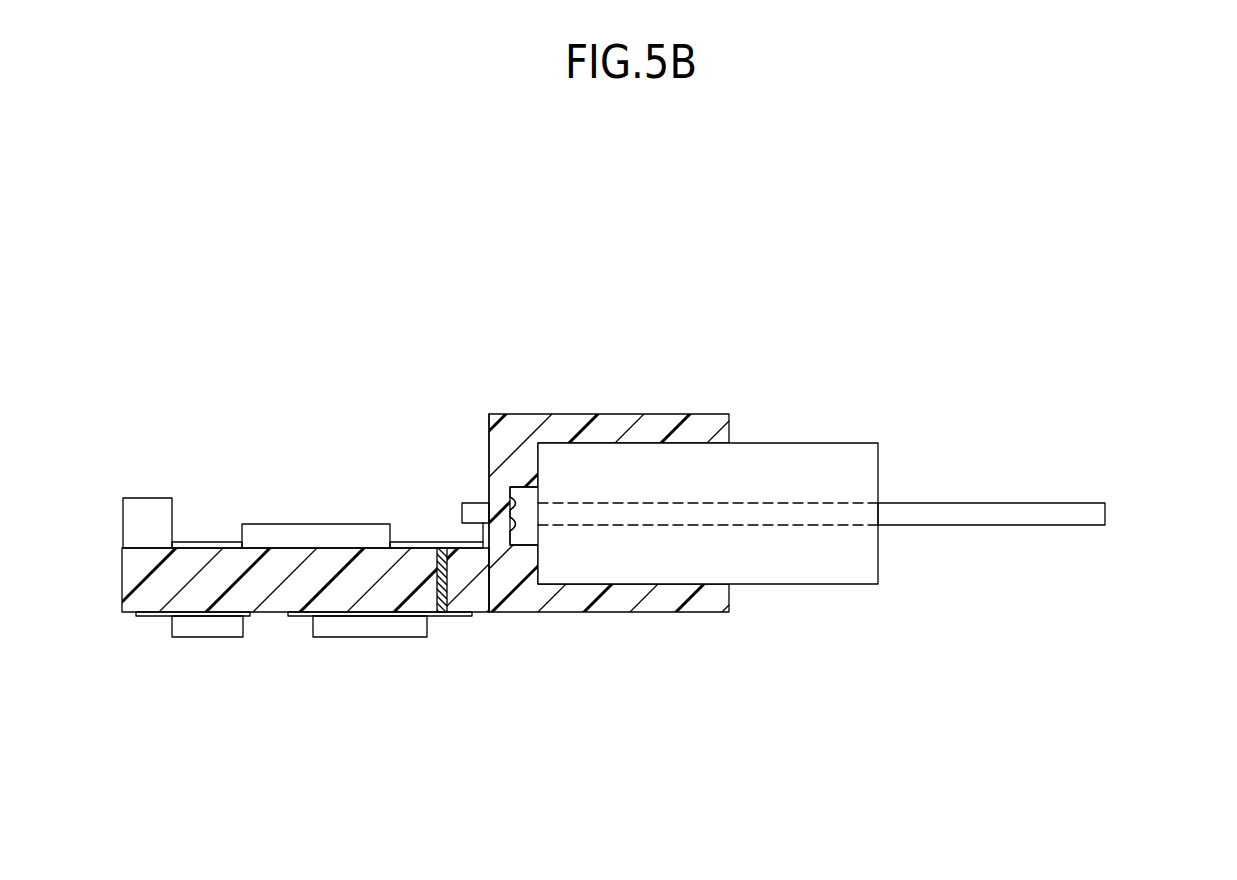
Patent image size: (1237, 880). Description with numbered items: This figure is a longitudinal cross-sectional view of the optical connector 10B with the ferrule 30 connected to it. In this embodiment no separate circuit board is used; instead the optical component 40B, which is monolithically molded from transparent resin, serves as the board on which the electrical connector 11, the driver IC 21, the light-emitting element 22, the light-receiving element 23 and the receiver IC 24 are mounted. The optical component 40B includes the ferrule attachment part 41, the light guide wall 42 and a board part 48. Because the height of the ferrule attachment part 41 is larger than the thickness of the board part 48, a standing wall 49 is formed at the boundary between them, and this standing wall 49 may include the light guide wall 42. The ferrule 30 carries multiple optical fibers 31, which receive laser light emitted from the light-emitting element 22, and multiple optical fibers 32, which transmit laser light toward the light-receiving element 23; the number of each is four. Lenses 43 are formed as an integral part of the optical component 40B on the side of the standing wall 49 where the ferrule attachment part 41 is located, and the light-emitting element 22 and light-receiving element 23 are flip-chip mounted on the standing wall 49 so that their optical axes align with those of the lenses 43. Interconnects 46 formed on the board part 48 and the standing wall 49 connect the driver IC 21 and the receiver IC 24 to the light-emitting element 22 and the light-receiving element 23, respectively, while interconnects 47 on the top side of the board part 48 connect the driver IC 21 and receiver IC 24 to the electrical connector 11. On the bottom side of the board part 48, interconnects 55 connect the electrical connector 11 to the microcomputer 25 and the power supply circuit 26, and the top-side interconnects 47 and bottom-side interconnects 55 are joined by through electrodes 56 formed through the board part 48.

The optical connector 10B is at (815, 329).
The electrical connector 11 is at (143, 506).
The driver IC 21 is at (316, 495).
The receiver IC 24 is at (291, 535).
The light-emitting element 22 is at (450, 462).
The light-receiving element 23 is at (472, 510).
The microcomputer 25 is at (378, 630).
The power supply circuit 26 is at (200, 630).
The ferrule 30 is at (848, 470).
The optical fibers 31 is at (848, 491).
The optical fibers 32 is at (1043, 505).
The optical component 40B is at (663, 500).
The ferrule attachment part 41 is at (680, 444).
The light guide wall 42 is at (518, 547).
The lenses 43 is at (512, 497).
The interconnects 46 is at (415, 540).
The interconnects 47 is at (210, 540).
The board part 48 is at (271, 588).
The standing wall 49 is at (489, 442).
The interconnects 55 is at (153, 618).
The through electrodes 56 is at (447, 546).